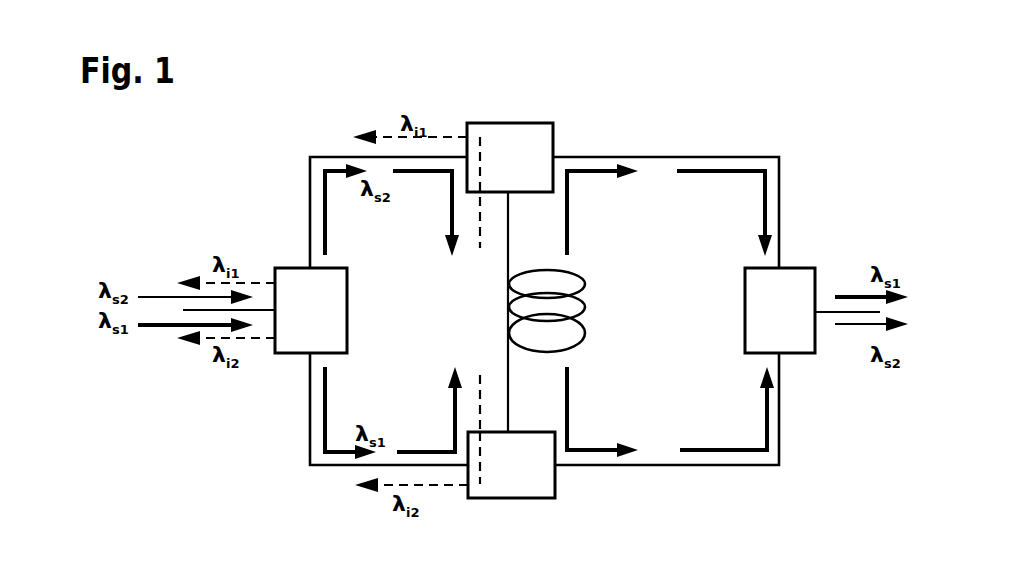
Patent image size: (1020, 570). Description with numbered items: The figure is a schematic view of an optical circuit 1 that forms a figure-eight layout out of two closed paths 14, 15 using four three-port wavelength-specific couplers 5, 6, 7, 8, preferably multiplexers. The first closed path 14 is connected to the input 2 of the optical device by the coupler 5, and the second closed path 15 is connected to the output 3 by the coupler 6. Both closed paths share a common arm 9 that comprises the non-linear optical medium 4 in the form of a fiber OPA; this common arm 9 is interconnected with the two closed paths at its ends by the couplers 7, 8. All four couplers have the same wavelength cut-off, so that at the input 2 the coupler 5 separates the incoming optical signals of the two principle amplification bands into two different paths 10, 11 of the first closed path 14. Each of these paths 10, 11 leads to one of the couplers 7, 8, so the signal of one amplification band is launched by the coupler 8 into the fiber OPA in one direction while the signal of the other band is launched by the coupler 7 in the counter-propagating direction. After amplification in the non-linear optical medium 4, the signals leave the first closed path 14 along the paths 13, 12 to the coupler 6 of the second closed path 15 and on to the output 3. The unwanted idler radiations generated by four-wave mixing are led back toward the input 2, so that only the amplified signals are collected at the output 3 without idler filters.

The optical circuit 1 is at (748, 96).
The input 2 is at (185, 310).
The output 3 is at (823, 312).
The non-linear optical medium 4 is at (532, 270).
The optical coupler 5 is at (290, 267).
The optical coupler 6 is at (796, 267).
The optical coupler 7 is at (511, 122).
The optical coupler 8 is at (507, 500).
The common arm 9 is at (508, 265).
The path 10 is at (324, 156).
The path 11 is at (325, 467).
The path 12 is at (765, 467).
The path 13 is at (777, 156).
The first closed path 14 is at (348, 394).
The second closed path 15 is at (652, 188).